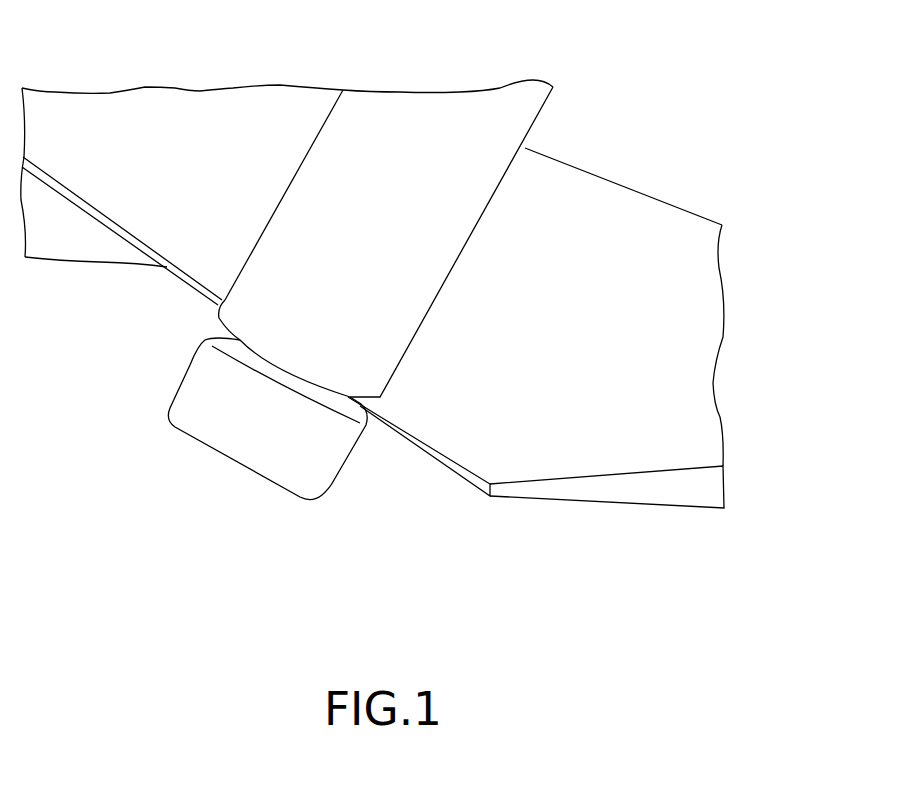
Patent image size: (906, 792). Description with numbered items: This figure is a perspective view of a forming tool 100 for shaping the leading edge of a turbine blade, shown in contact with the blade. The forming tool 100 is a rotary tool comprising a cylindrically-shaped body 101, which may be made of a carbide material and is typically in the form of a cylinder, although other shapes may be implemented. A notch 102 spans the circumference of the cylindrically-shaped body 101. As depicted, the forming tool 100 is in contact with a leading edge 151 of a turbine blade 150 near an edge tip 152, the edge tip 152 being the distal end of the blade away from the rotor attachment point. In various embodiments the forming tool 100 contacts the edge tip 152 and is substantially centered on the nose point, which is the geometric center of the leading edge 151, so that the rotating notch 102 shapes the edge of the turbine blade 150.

The forming tool 100 is at (130, 39).
The cylindrically-shaped body 101 is at (490, 138).
The notch 102 is at (172, 336).
The turbine blade 150 is at (678, 415).
The leading edge 151 is at (437, 486).
The edge tip 152 is at (537, 455).